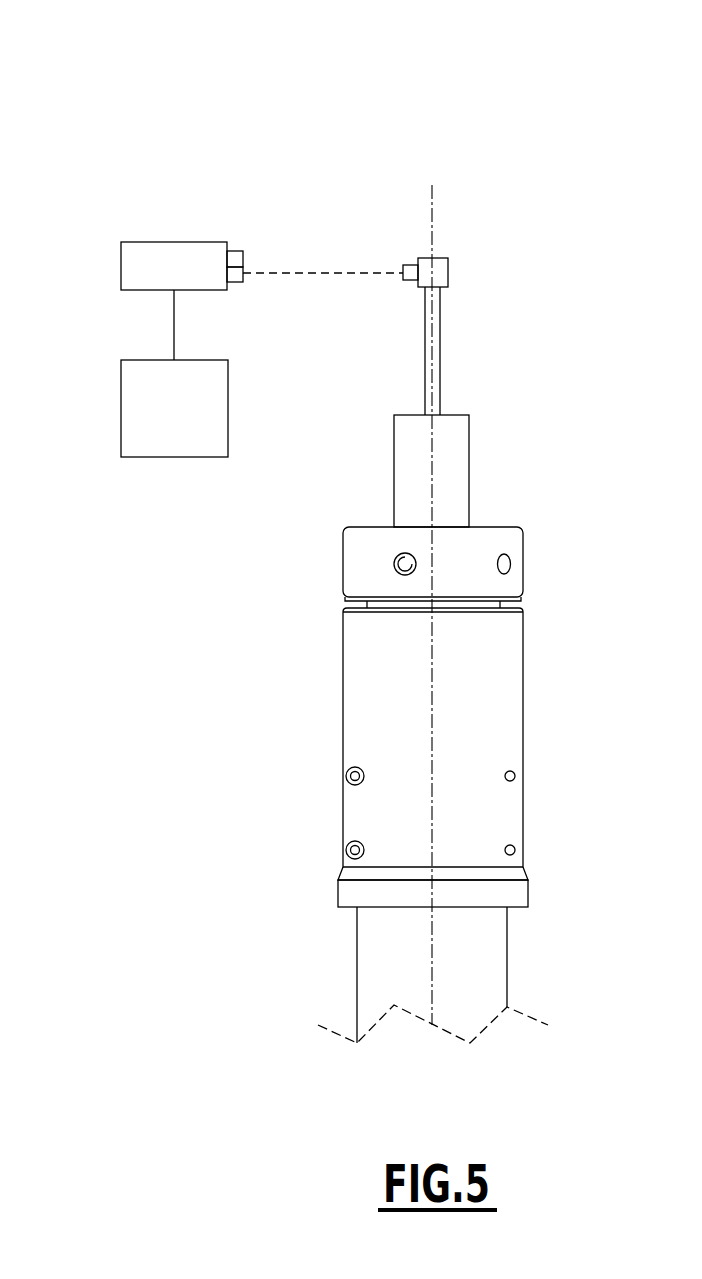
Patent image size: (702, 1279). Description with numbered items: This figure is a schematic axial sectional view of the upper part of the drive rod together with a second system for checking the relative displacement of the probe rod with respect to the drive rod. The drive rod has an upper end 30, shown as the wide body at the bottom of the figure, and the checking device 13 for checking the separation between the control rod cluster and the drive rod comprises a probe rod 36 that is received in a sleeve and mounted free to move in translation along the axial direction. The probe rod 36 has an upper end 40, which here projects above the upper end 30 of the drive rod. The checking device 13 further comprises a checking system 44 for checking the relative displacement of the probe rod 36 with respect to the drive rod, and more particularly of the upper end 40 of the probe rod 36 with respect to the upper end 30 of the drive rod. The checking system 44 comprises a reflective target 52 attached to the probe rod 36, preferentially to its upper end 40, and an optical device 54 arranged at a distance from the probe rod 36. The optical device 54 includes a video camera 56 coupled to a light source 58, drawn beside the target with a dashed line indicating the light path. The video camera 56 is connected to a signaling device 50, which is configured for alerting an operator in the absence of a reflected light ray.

The checking device 13 is at (298, 116).
The upper end 30 is at (455, 470).
The probe rod 36 is at (440, 352).
The upper end 40 is at (440, 273).
The checking system 44 is at (288, 230).
The signaling device 50 is at (163, 440).
The reflective target 52 is at (413, 265).
The optical device 54 is at (112, 236).
The video camera 56 is at (232, 251).
The light source 58 is at (234, 283).